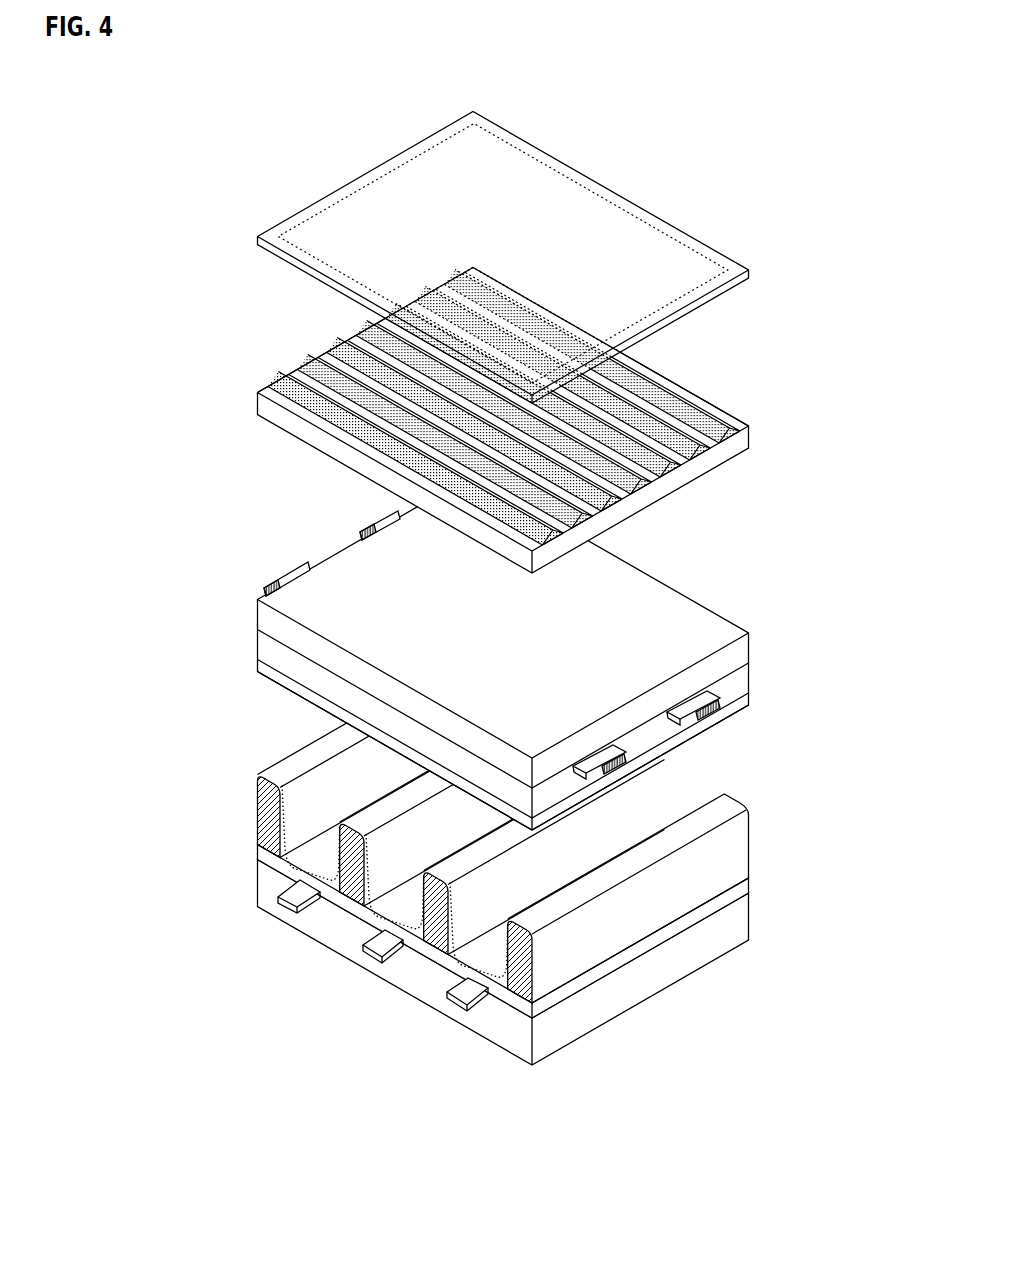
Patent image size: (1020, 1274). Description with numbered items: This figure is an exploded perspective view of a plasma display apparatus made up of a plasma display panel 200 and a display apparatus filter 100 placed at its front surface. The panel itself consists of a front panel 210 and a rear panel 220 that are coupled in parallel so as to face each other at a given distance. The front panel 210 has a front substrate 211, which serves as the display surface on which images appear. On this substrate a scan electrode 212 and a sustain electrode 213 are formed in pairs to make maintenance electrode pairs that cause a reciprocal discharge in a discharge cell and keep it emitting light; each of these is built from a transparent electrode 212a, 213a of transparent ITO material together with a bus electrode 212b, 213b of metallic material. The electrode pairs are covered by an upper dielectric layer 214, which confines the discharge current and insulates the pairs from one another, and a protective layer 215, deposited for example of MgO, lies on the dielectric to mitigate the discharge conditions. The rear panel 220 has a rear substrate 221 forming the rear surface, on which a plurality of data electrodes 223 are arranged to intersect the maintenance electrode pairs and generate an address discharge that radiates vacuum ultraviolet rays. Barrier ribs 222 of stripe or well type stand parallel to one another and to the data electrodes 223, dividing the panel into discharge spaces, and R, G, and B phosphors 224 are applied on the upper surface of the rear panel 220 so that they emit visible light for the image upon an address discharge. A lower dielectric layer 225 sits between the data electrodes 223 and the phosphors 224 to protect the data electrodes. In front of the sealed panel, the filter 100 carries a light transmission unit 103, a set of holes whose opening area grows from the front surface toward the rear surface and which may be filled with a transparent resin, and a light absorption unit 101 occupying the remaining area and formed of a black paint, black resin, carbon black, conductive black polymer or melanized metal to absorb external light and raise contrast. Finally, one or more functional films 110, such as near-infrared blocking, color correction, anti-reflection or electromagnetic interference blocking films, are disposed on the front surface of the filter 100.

The display apparatus filter 100 is at (512, 421).
The light absorption unit 101 is at (746, 455).
The light transmission unit 103 is at (700, 490).
The functional films 110 is at (372, 140).
The plasma display panel 200 is at (468, 791).
The front panel 210 is at (524, 645).
The front substrate 211 is at (680, 607).
The scan electrode 212 is at (729, 780).
The transparent electrode 212a is at (620, 738).
The bus electrode 212b is at (678, 828).
The sustain electrode 213 is at (776, 698).
The transparent electrode 213a is at (712, 690).
The bus electrode 213b is at (703, 716).
The upper dielectric layer 214 is at (262, 648).
The protective layer 215 is at (262, 675).
The rear panel 220 is at (495, 886).
The rear substrate 221 is at (675, 968).
The barrier ribs 222 is at (737, 855).
The data electrodes 223 is at (355, 957).
The phosphors 224 is at (264, 836).
The lower dielectric layer 225 is at (258, 853).